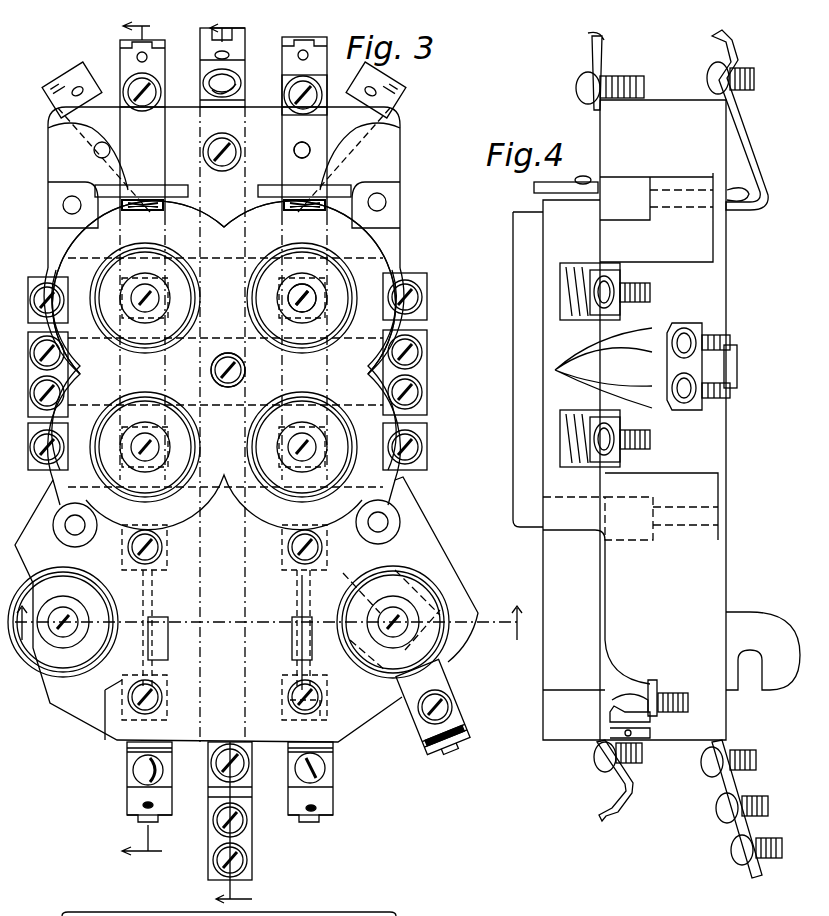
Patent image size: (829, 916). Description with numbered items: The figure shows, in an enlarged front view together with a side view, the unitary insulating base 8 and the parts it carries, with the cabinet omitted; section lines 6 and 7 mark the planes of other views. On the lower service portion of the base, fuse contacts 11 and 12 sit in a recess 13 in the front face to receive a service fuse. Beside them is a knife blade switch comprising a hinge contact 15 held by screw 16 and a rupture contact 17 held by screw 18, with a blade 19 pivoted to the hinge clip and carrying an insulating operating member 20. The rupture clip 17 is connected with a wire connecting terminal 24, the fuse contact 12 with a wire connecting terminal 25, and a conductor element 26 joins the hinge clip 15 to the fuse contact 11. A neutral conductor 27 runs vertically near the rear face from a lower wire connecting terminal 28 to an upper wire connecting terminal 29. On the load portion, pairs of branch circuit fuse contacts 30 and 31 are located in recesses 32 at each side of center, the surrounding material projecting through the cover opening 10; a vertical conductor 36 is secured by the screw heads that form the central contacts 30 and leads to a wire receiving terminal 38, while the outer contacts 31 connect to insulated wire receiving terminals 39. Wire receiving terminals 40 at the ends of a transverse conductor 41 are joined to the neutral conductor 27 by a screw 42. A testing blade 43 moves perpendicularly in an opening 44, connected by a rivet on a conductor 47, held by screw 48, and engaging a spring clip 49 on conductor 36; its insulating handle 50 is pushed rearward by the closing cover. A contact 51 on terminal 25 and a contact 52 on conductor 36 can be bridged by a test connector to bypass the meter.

In FIG. 3, the section line 6- 6 is at (130, 441).
In FIG. 3, the section line 7- 7 is at (229, 465).
In FIG. 3, the insulating base 8 is at (388, 161).
In FIG. 4, the insulating base 8 is at (718, 304).
In FIG. 3, the opening in cover 10 is at (72, 90).
In FIG. 3, the fuse contact 11 is at (402, 625).
In FIG. 3, the fuse contact 12 is at (430, 580).
In FIG. 3, the recess 13 is at (452, 595).
In FIG. 3, the hinge contact 15 is at (226, 630).
In FIG. 3, the screw 16 is at (296, 548).
In FIG. 3, the rupture contact 17 is at (290, 716).
In FIG. 3, the screw 18 is at (296, 692).
In FIG. 3, the blade 19 is at (306, 601).
In FIG. 3, the operating member 20 is at (298, 640).
In FIG. 3, the wire connecting terminal 24 is at (135, 770).
In FIG. 3, the wire connecting terminal 25 is at (458, 712).
In FIG. 3, the conductor element 26 is at (391, 607).
In FIG. 3, the neutral conductor 27 is at (248, 745).
In FIG. 3, the wire connecting terminal 28 is at (218, 772).
In FIG. 3, the wire connecting terminal 29 is at (210, 84).
In FIG. 3, the central fuse contact 30 is at (293, 300).
In FIG. 3, the outer fuse contact 31 is at (340, 265).
In FIG. 3, the recess 32 is at (268, 268).
In FIG. 3, the conductor 36 is at (320, 237).
In FIG. 3, the wire receiving terminal 38 is at (320, 90).
In FIG. 3, the wire receiving terminal 39 is at (422, 294).
In FIG. 4, the wire receiving terminal 39 is at (616, 282).
In FIG. 3, the wire receiving terminal 40 is at (430, 372).
In FIG. 4, the wire receiving terminal 40 is at (700, 408).
In FIG. 3, the transverse conductor 41 is at (250, 352).
In FIG. 3, the screw 42 is at (212, 370).
In FIG. 3, the blade 43 is at (268, 201).
In FIG. 3, the opening 44 is at (285, 206).
In FIG. 3, the conductor 47 is at (292, 134).
In FIG. 3, the screw 48 is at (300, 152).
In FIG. 4, the spring clip 49 is at (737, 120).
In FIG. 4, the handle 50 is at (563, 176).
In FIG. 3, the contact 51 is at (460, 735).
In FIG. 3, the contact 52 is at (392, 100).